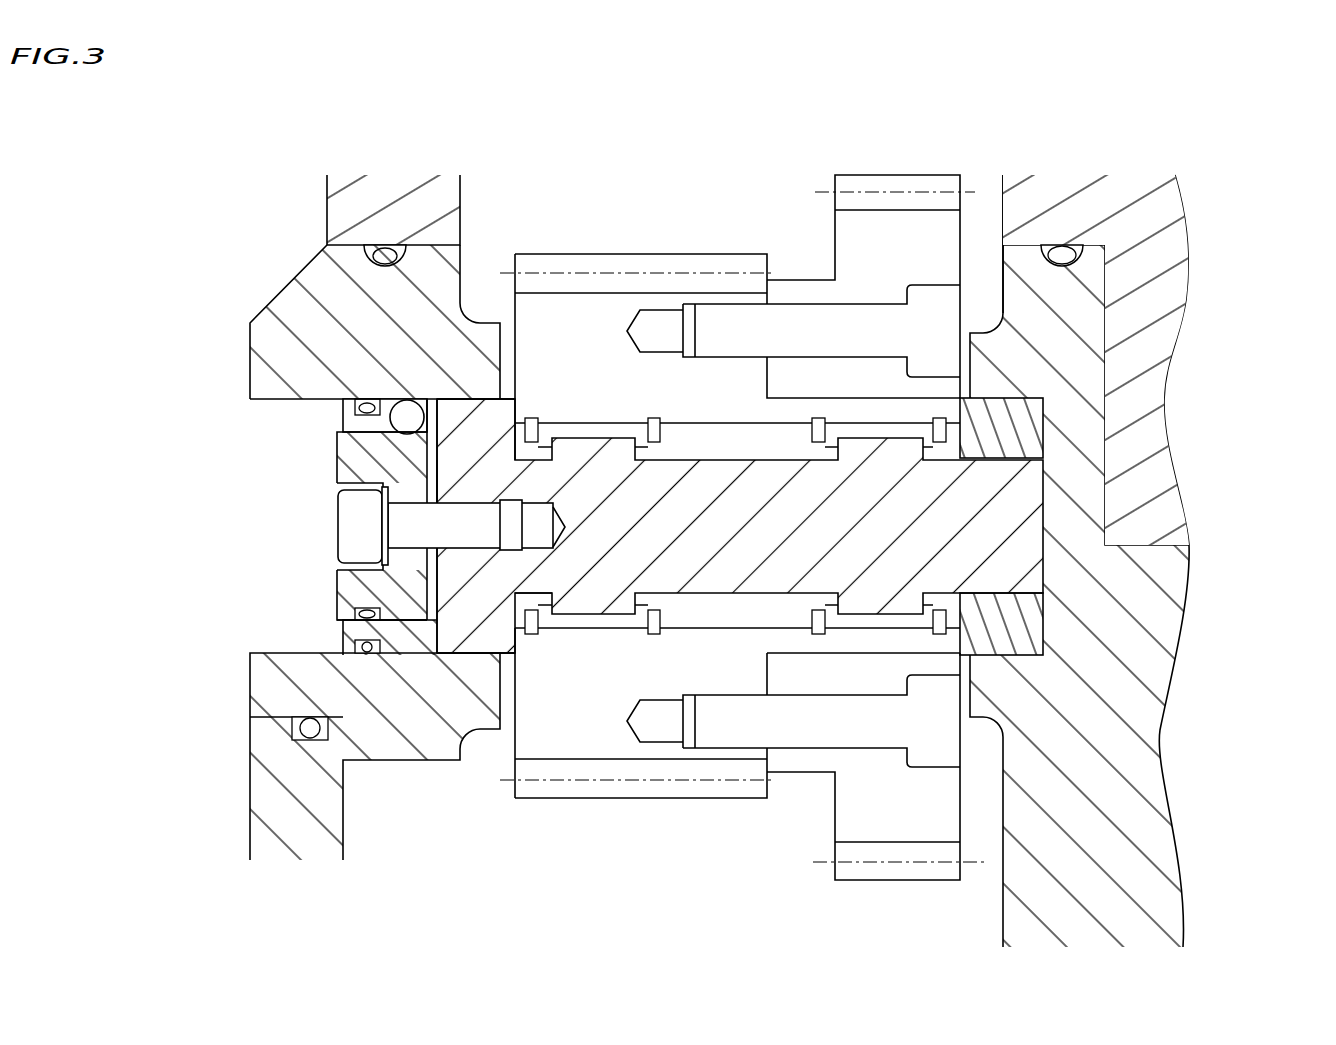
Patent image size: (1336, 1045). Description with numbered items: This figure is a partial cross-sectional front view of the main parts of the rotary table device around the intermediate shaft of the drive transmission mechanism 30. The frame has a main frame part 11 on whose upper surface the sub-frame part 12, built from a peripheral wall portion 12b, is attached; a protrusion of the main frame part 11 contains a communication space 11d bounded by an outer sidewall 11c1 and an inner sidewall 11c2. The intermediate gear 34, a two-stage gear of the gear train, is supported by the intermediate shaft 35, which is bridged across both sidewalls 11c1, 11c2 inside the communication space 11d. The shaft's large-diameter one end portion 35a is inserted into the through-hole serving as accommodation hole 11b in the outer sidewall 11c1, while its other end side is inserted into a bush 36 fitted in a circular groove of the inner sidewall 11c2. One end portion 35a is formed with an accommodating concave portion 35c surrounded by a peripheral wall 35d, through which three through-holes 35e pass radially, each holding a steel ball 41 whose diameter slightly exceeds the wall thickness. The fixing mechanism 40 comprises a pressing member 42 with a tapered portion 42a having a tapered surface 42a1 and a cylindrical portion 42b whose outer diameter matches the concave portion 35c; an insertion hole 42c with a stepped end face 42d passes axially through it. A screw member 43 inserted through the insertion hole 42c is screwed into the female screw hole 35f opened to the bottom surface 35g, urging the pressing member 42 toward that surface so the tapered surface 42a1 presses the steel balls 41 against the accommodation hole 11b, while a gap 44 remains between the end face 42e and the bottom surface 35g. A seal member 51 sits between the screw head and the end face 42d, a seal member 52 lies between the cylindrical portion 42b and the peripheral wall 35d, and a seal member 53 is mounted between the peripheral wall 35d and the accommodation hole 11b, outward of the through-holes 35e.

The main frame part 11 is at (624, 516).
The through-hole (accommodation hole) 11b is at (340, 648).
The outer sidewall 11c1 is at (313, 262).
The inner sidewall 11c2 is at (1070, 318).
The communication space 11d is at (1003, 190).
The sub-frame part 12 is at (382, 245).
The peripheral wall portion 12b is at (382, 322).
The drive transmission mechanism 30 is at (180, 155).
The intermediate gear 34 is at (690, 250).
The intermediate shaft 35 is at (625, 533).
The one end portion 35a is at (470, 440).
The accommodating concave portion 35c is at (412, 395).
The peripheral wall 35d is at (345, 760).
The through-hole 35e is at (400, 398).
The female screw hole 35f is at (560, 580).
The bottom surface 35g is at (543, 595).
The bush 36 is at (1050, 406).
The fixing mechanism 40 is at (137, 238).
The steel ball 41 is at (290, 300).
The pressing member 42 is at (335, 526).
The tapered portion 42a is at (455, 600).
The tapered surface 42a1 is at (432, 622).
The cylindrical portion 42b is at (337, 440).
The insertion hole 42c is at (274, 501).
The end face 42d is at (400, 658).
The end face 42e is at (424, 400).
The screw member 43 is at (254, 554).
The gap 44 is at (396, 676).
The seal member 51 is at (338, 533).
The seal member 52 is at (335, 578).
The seal member 53 is at (340, 605).